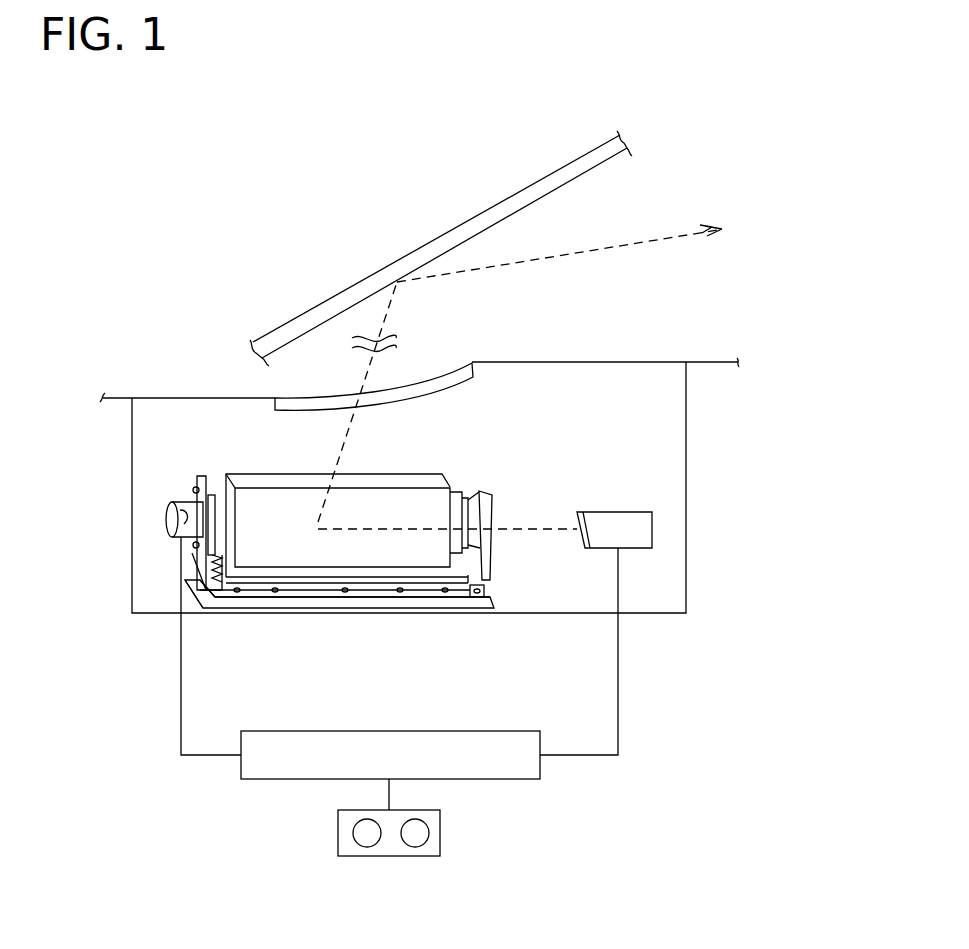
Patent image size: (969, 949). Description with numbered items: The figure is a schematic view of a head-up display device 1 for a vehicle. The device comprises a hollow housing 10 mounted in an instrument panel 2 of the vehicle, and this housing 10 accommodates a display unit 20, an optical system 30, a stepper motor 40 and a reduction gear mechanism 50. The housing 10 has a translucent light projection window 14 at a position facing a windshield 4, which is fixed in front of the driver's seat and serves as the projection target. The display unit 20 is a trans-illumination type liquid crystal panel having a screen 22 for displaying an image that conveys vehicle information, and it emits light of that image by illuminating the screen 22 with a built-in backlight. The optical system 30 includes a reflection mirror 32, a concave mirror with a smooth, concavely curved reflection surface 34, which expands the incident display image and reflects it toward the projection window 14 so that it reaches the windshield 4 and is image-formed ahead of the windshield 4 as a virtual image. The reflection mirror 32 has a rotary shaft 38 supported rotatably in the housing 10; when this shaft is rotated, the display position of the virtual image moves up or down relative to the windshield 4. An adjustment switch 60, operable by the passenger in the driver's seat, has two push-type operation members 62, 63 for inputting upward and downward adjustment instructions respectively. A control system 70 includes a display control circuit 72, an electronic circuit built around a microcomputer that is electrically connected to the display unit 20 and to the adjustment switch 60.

The head-up display device 1 is at (706, 617).
The instrument panel 2 is at (712, 360).
The windshield 4 is at (552, 176).
The housing 10 is at (686, 416).
The light projection window 14 is at (452, 366).
The display unit 20 is at (655, 530).
The screen 22 is at (568, 512).
The optical system 30 is at (212, 460).
The reflection mirror 32 is at (371, 560).
The reflection surface 34 is at (284, 558).
The rotary shaft 38 is at (486, 496).
The stepper motor 40 is at (185, 500).
The reduction gear mechanism 50 is at (180, 538).
The adjustment switch 60 is at (442, 830).
The operation member 62 is at (367, 848).
The operation member 63 is at (415, 848).
The control system 70 is at (326, 724).
The display control circuit 72 is at (458, 731).